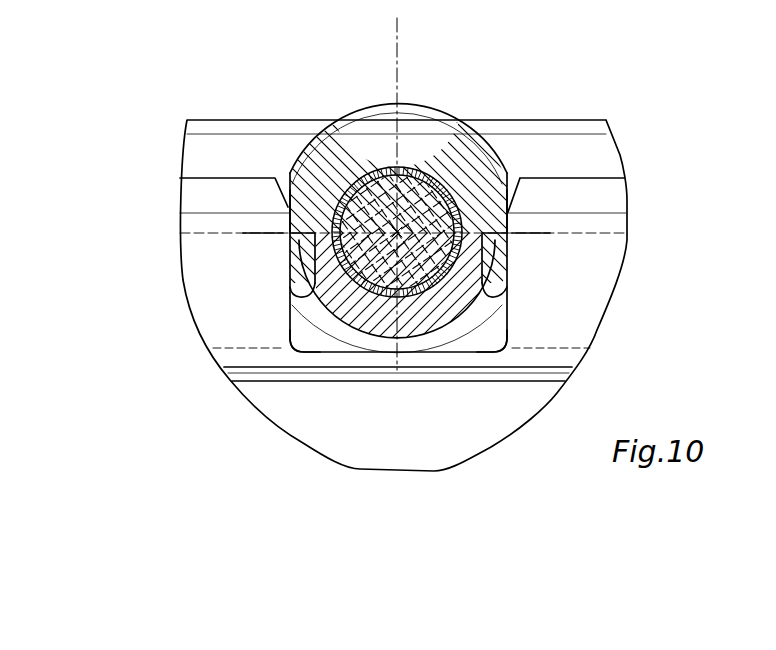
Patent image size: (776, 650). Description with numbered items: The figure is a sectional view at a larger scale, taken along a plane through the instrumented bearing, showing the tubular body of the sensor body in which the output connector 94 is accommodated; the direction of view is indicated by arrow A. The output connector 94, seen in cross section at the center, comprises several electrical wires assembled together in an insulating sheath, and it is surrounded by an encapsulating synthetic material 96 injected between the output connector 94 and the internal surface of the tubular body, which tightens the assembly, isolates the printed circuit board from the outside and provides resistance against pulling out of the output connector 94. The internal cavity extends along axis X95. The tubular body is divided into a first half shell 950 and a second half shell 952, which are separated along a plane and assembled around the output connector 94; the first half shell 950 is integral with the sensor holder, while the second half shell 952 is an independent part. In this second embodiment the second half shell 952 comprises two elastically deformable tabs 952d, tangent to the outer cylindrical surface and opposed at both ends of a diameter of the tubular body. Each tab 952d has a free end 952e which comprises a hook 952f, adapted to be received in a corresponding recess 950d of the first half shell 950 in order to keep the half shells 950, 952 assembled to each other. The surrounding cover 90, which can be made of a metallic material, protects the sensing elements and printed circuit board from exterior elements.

The cover 90 is at (573, 120).
The output connector 94 is at (345, 283).
The encapsulating synthetic material 96 is at (414, 170).
The axis X95 is at (397, 232).
The viewing direction arrow A is at (483, 92).
The first half shell 950 is at (385, 318).
The recess 950d is at (292, 287).
The second half shell 952 is at (350, 120).
The elastically deformable tab 952d is at (290, 257).
The free end 952e is at (296, 353).
The hook 952f is at (290, 197).